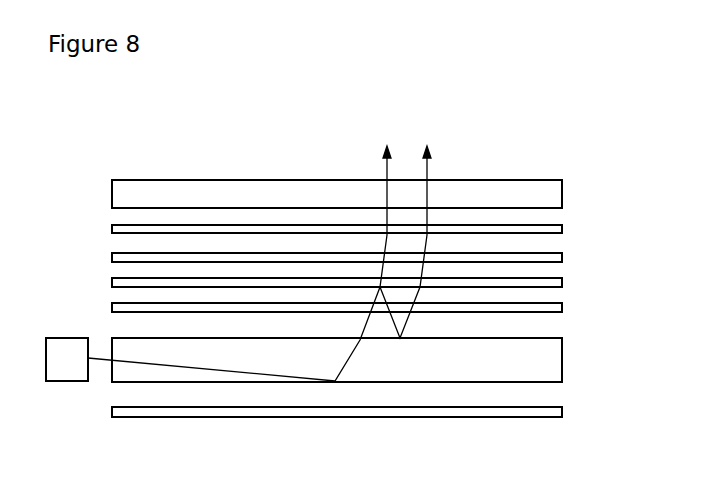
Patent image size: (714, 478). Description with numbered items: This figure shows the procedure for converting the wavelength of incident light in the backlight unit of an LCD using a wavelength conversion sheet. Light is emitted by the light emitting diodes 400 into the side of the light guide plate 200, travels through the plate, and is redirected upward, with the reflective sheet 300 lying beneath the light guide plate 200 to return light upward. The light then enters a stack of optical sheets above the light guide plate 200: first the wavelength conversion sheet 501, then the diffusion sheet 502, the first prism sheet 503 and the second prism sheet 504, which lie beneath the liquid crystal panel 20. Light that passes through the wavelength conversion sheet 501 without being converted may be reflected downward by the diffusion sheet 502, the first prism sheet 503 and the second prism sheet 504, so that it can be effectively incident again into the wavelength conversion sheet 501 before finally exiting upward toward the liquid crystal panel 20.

The liquid crystal panel 20 is at (556, 195).
The second prism sheet 504 is at (556, 229).
The first prism sheet 503 is at (556, 257).
The diffusion sheet 502 is at (556, 282).
The wavelength conversion sheet 501 is at (556, 307).
The light guide plate 200 is at (556, 360).
The reflective sheet 300 is at (556, 411).
The light emitting diodes 400 is at (68, 345).